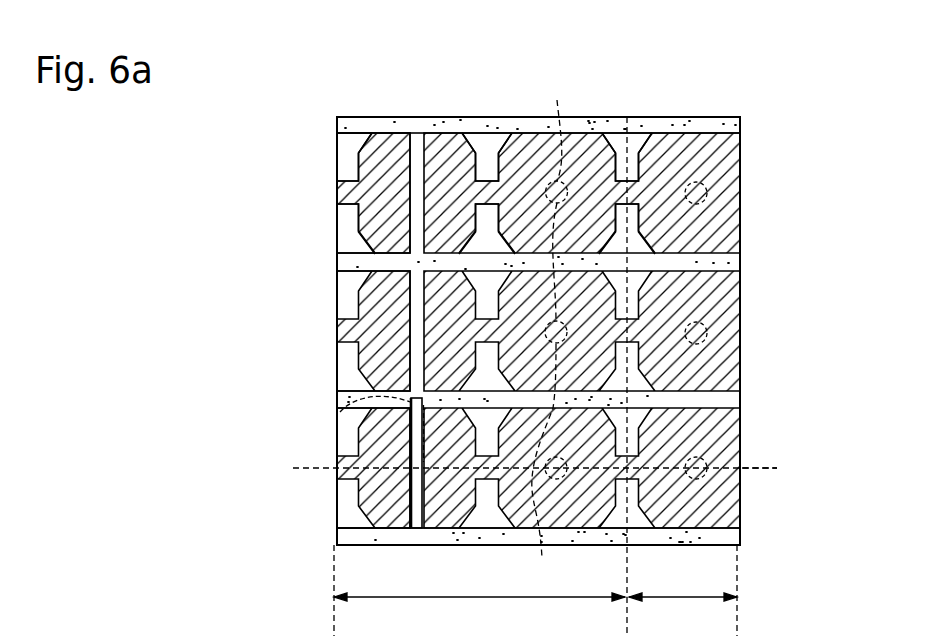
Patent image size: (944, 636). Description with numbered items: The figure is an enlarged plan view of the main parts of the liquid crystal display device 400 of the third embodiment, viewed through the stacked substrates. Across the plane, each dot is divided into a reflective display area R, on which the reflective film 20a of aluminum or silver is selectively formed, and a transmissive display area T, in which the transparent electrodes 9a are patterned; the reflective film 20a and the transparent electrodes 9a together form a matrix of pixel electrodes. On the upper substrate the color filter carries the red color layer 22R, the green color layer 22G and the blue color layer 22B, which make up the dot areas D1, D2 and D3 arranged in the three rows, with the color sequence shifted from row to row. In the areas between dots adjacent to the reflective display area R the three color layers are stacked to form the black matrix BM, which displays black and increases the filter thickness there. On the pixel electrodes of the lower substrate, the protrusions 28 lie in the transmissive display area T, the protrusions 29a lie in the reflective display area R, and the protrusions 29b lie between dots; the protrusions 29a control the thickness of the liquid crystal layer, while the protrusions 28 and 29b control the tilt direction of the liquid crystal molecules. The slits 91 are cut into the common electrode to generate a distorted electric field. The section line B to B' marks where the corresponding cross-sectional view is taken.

The liquid crystal display device 400 is at (767, 124).
The black matrix BM is at (347, 117).
The protrusion 29a is at (400, 126).
The protrusion 29b is at (551, 329).
The slit 91 is at (340, 146).
The transparent electrode 9a is at (707, 148).
The reflective film 20a is at (784, 331).
The protrusion 28 is at (708, 194).
The green color layer 22G is at (372, 228).
The blue color layer 22B is at (707, 231).
The red color layer 22R is at (372, 366).
The dot area D1 is at (355, 201).
The dot area D2 is at (365, 296).
The dot area D3 is at (372, 522).
The section line B is at (526, 461).
The section line B' is at (772, 463).
The reflective display area R is at (535, 376).
The transmissive display area T is at (683, 612).